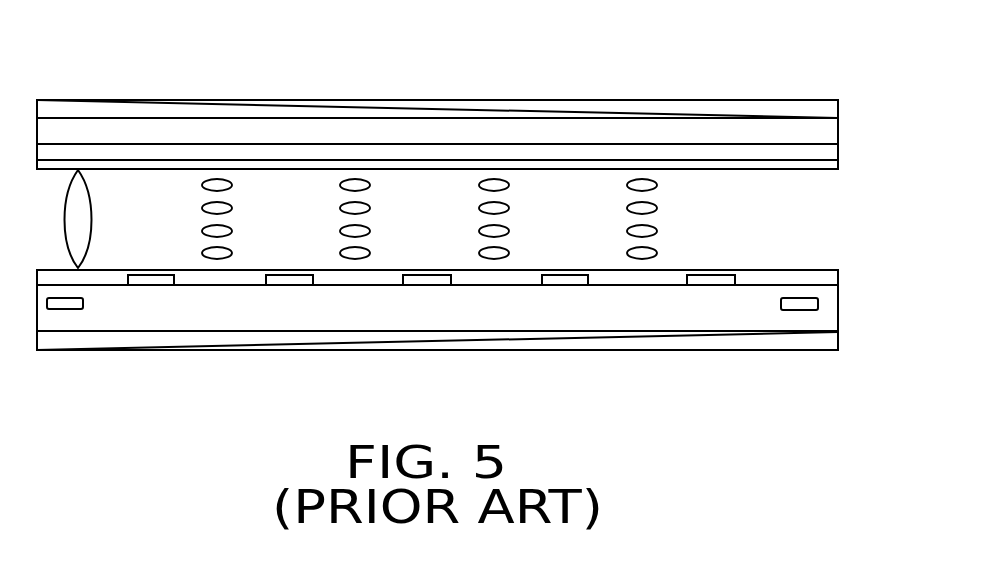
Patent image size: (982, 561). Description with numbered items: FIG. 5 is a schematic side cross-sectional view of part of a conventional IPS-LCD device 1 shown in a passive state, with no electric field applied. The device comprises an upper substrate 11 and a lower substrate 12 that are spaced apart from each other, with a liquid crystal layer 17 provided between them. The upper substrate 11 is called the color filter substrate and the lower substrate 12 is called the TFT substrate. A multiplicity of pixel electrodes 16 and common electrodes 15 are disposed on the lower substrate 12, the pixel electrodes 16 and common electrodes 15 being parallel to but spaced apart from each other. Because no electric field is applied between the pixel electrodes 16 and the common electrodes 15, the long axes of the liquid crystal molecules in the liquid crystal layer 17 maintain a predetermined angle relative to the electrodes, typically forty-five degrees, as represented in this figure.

The IPS-LCD device 1 is at (411, 39).
The upper substrate 11 is at (818, 132).
The lower substrate 12 is at (828, 310).
The common electrodes 15 is at (148, 283).
The pixel electrodes 16 is at (287, 283).
The liquid crystal layer 17 is at (692, 214).